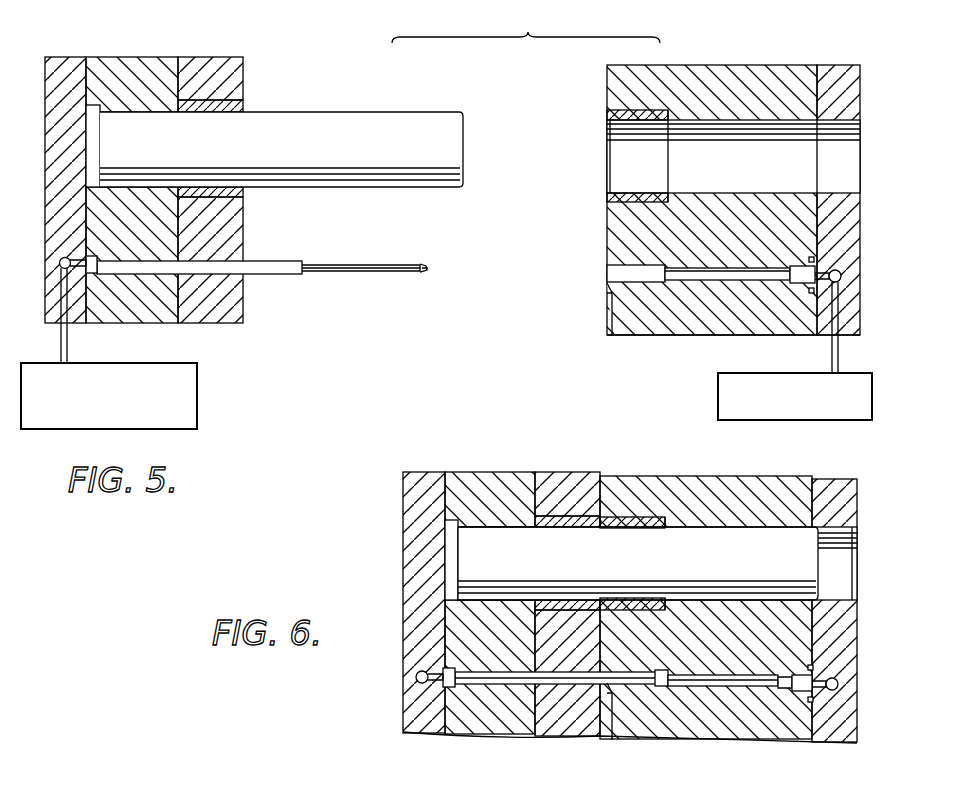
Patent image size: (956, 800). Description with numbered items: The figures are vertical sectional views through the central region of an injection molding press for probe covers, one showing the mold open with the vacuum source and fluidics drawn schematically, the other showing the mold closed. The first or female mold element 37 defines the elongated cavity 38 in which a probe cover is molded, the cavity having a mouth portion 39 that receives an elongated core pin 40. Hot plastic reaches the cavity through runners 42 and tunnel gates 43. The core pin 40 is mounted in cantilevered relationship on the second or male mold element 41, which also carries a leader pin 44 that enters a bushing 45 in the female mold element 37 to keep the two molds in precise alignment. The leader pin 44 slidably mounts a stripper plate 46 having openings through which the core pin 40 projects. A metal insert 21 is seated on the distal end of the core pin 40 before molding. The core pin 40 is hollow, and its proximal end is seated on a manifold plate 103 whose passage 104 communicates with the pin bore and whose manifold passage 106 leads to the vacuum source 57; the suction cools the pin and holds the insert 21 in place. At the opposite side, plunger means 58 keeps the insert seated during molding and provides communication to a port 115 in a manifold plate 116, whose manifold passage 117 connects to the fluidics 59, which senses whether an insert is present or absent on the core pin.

In FIG. 5, the metal insert 21 is at (428, 268).
In FIG. 5, the first (female) mold element 37 is at (726, 66).
In FIG. 6, the first (female) mold element 37 is at (733, 740).
In FIG. 5, the cavities 38 is at (722, 258).
In FIG. 6, the cavities 38 is at (658, 688).
In FIG. 5, the mouth portions 39 is at (608, 273).
In FIG. 5, the core pins 40 is at (262, 262).
In FIG. 6, the core pins 40 is at (556, 685).
In FIG. 5, the second (male) mold element 41 is at (134, 58).
In FIG. 6, the second (male) mold element 41 is at (498, 472).
In FIG. 5, the runners 42 is at (606, 324).
In FIG. 5, the tunnel gates 43 is at (614, 288).
In FIG. 6, the tunnel gates 43 is at (608, 700).
In FIG. 5, the leader pins 44 is at (302, 96).
In FIG. 6, the leader pins 44 is at (500, 506).
In FIG. 5, the bushings 45 is at (622, 112).
In FIG. 6, the bushings 45 is at (636, 528).
In FIG. 5, the stripper plate 46 is at (224, 40).
In FIG. 6, the stripper plate 46 is at (566, 458).
In FIG. 5, the vacuum source 57 is at (168, 363).
In FIG. 5, the plunger means 58 is at (800, 284).
In FIG. 6, the plunger means 58 is at (796, 675).
In FIG. 5, the fluidic sensing and control means 59 is at (776, 373).
In FIG. 5, the manifold plate 103 is at (62, 57).
In FIG. 6, the manifold plate 103 is at (418, 472).
In FIG. 5, the passages 104 is at (78, 262).
In FIG. 6, the passages 104 is at (428, 684).
In FIG. 5, the manifold passage 106 is at (56, 270).
In FIG. 5, the port 115 is at (832, 270).
In FIG. 5, the manifold plate 116 is at (822, 67).
In FIG. 6, the manifold plate 116 is at (836, 745).
In FIG. 5, the manifold passage 117 is at (843, 276).